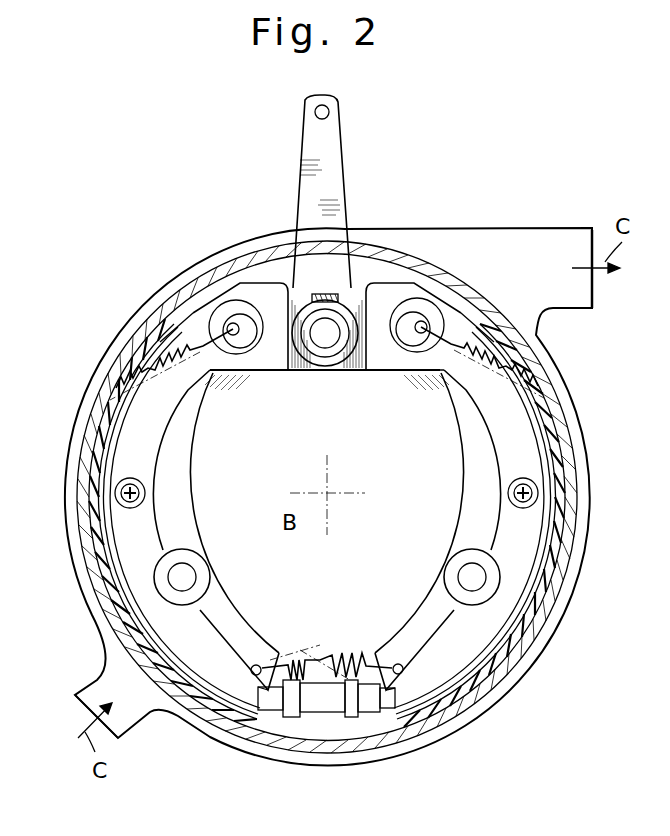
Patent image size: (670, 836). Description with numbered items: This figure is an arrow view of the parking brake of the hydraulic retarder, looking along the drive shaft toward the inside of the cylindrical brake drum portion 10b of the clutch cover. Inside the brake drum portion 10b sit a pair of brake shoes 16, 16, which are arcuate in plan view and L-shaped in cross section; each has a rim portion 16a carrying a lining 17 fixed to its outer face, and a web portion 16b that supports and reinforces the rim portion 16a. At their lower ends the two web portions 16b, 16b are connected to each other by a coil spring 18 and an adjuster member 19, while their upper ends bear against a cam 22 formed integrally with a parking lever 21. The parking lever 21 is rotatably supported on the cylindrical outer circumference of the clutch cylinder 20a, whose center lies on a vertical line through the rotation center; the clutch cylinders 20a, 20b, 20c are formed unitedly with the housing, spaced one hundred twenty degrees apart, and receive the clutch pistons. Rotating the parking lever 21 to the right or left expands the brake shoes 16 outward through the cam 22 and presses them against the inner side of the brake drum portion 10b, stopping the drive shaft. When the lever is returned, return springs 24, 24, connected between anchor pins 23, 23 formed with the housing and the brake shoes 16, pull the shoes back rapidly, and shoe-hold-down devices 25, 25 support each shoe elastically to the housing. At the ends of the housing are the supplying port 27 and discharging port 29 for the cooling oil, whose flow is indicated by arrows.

The brake drum portion 10b is at (560, 590).
The brake shoe 16 is at (172, 516).
The rim portion 16a is at (112, 438).
The web portion 16b is at (137, 443).
The lining 17 is at (85, 487).
The coil spring 18 is at (353, 648).
The adjuster member 19 is at (353, 700).
The clutch cylinder 20a is at (320, 352).
The clutch cylinder 20b is at (200, 575).
The clutch cylinder 20c is at (466, 572).
The parking lever 21 is at (336, 176).
The cam 22 is at (352, 362).
The anchor pin 23 is at (225, 318).
The return spring 24 is at (160, 360).
The shoe-hold-down device 25 is at (122, 500).
The supplying port 27 is at (97, 680).
The discharging port 29 is at (568, 228).